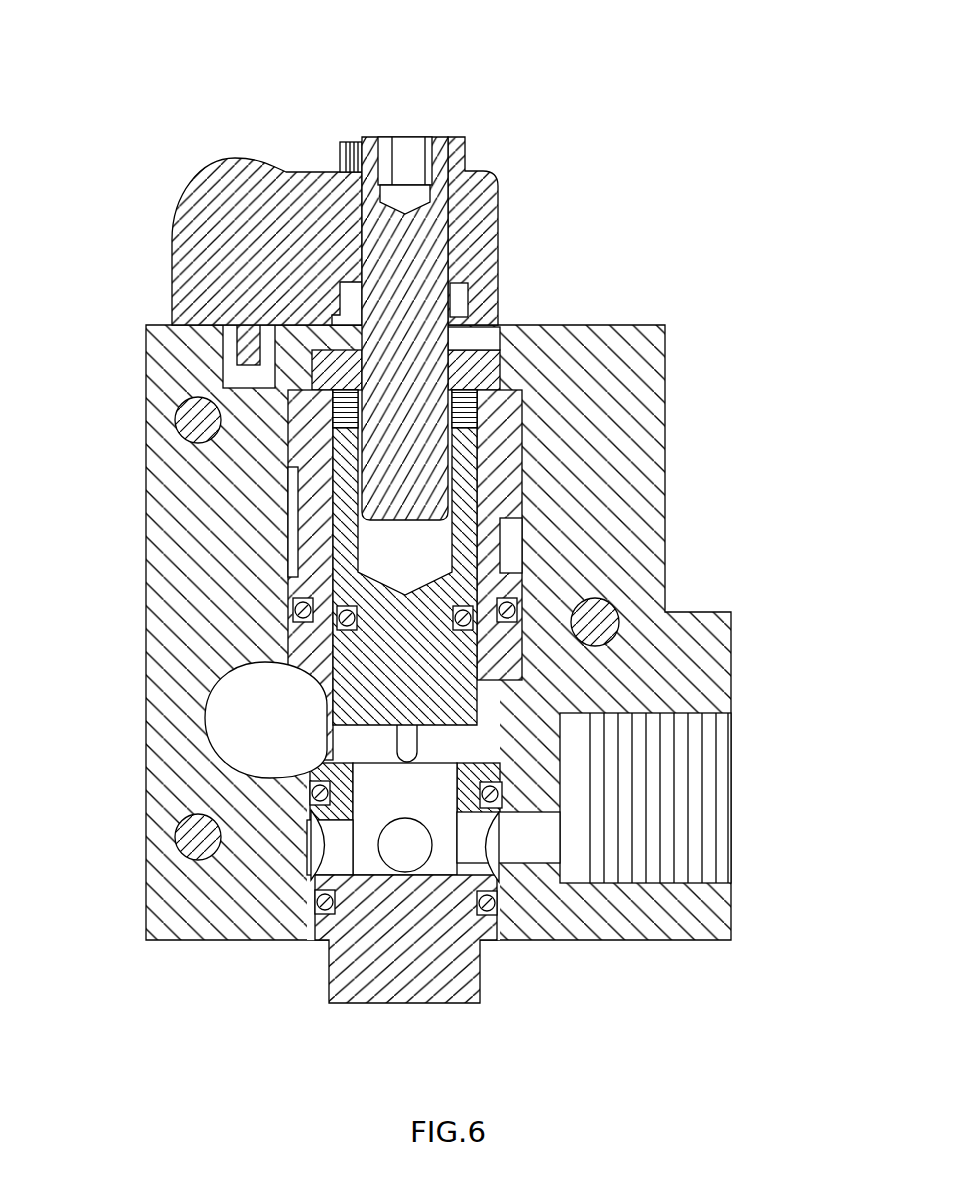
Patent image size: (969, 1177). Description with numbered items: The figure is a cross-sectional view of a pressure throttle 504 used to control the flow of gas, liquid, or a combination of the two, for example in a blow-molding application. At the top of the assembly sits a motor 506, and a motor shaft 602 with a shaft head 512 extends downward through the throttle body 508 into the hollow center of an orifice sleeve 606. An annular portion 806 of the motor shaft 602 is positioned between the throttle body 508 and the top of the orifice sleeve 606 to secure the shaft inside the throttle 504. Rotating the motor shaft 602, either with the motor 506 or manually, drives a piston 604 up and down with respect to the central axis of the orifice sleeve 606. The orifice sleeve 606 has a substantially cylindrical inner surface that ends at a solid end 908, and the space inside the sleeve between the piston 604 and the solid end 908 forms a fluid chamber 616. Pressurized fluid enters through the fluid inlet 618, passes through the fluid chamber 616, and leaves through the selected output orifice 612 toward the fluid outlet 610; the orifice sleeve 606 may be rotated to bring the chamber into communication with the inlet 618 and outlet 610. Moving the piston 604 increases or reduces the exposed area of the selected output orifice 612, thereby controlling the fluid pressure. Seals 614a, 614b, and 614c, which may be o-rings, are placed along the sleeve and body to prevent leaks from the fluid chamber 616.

The pressure throttle 504 is at (122, 40).
The shaft head 512 is at (405, 136).
The motor shaft 602 is at (597, 291).
The annular portion 806 is at (487, 380).
The motor 506 is at (190, 245).
The orifice sleeve 606 is at (306, 423).
The piston 604 is at (353, 657).
The seal 614a is at (512, 612).
The throttle body 508 is at (160, 737).
The selected output orifice 612 is at (330, 705).
The fluid outlet 610 is at (288, 755).
The fluid chamber 616 is at (385, 803).
The fluid inlet 618 is at (693, 798).
The seal 614b is at (498, 794).
The seal 614c is at (488, 911).
The solid end 908 is at (418, 948).